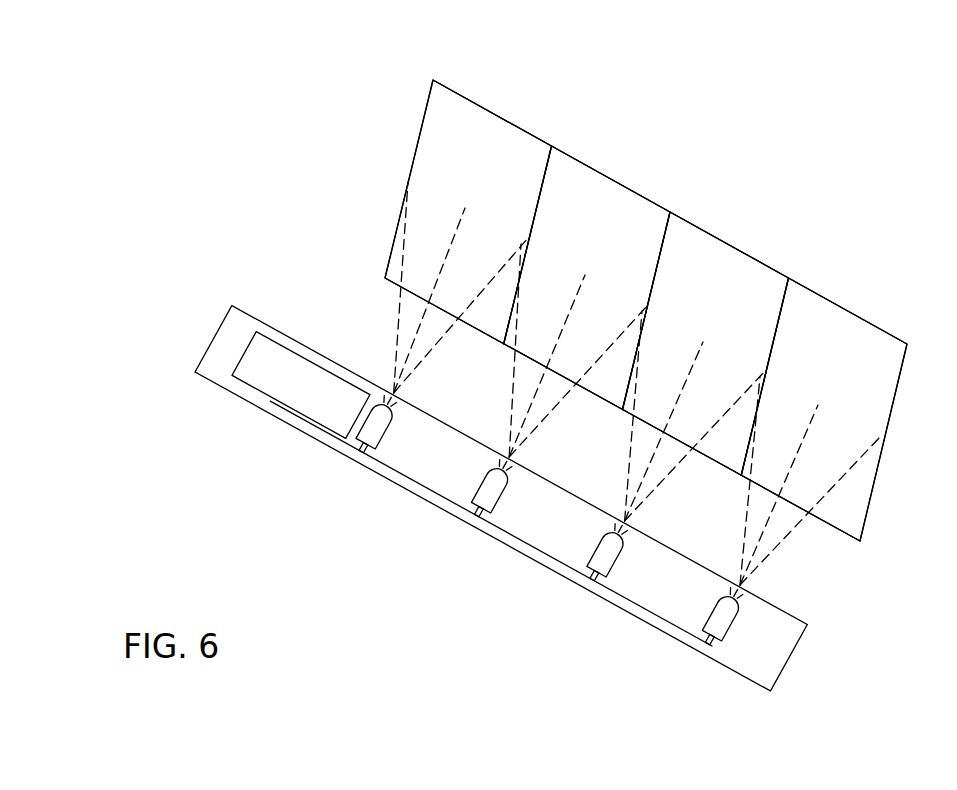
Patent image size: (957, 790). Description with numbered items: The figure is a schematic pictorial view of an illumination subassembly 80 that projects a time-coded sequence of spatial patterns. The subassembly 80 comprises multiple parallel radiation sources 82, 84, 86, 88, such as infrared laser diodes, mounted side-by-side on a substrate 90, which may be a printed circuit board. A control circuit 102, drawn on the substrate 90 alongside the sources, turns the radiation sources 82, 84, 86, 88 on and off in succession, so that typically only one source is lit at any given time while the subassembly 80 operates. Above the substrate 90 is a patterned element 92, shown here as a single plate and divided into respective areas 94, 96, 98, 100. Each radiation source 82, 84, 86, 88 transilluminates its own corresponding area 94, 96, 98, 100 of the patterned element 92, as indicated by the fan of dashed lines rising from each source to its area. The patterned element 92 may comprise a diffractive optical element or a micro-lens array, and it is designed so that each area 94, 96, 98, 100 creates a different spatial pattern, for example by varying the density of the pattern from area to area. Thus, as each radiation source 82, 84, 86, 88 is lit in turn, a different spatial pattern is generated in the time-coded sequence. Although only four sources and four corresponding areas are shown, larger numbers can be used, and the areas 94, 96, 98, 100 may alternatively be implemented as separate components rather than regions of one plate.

The illumination subassembly 80 is at (88, 103).
The radiation source 82 is at (384, 433).
The radiation source 84 is at (490, 496).
The radiation source 86 is at (606, 560).
The radiation source 88 is at (721, 624).
The substrate 90 is at (788, 660).
The patterned element 92 is at (943, 301).
The area 94 is at (493, 113).
The area 96 is at (612, 178).
The area 98 is at (729, 244).
The area 100 is at (850, 312).
The control circuit 102 is at (270, 405).